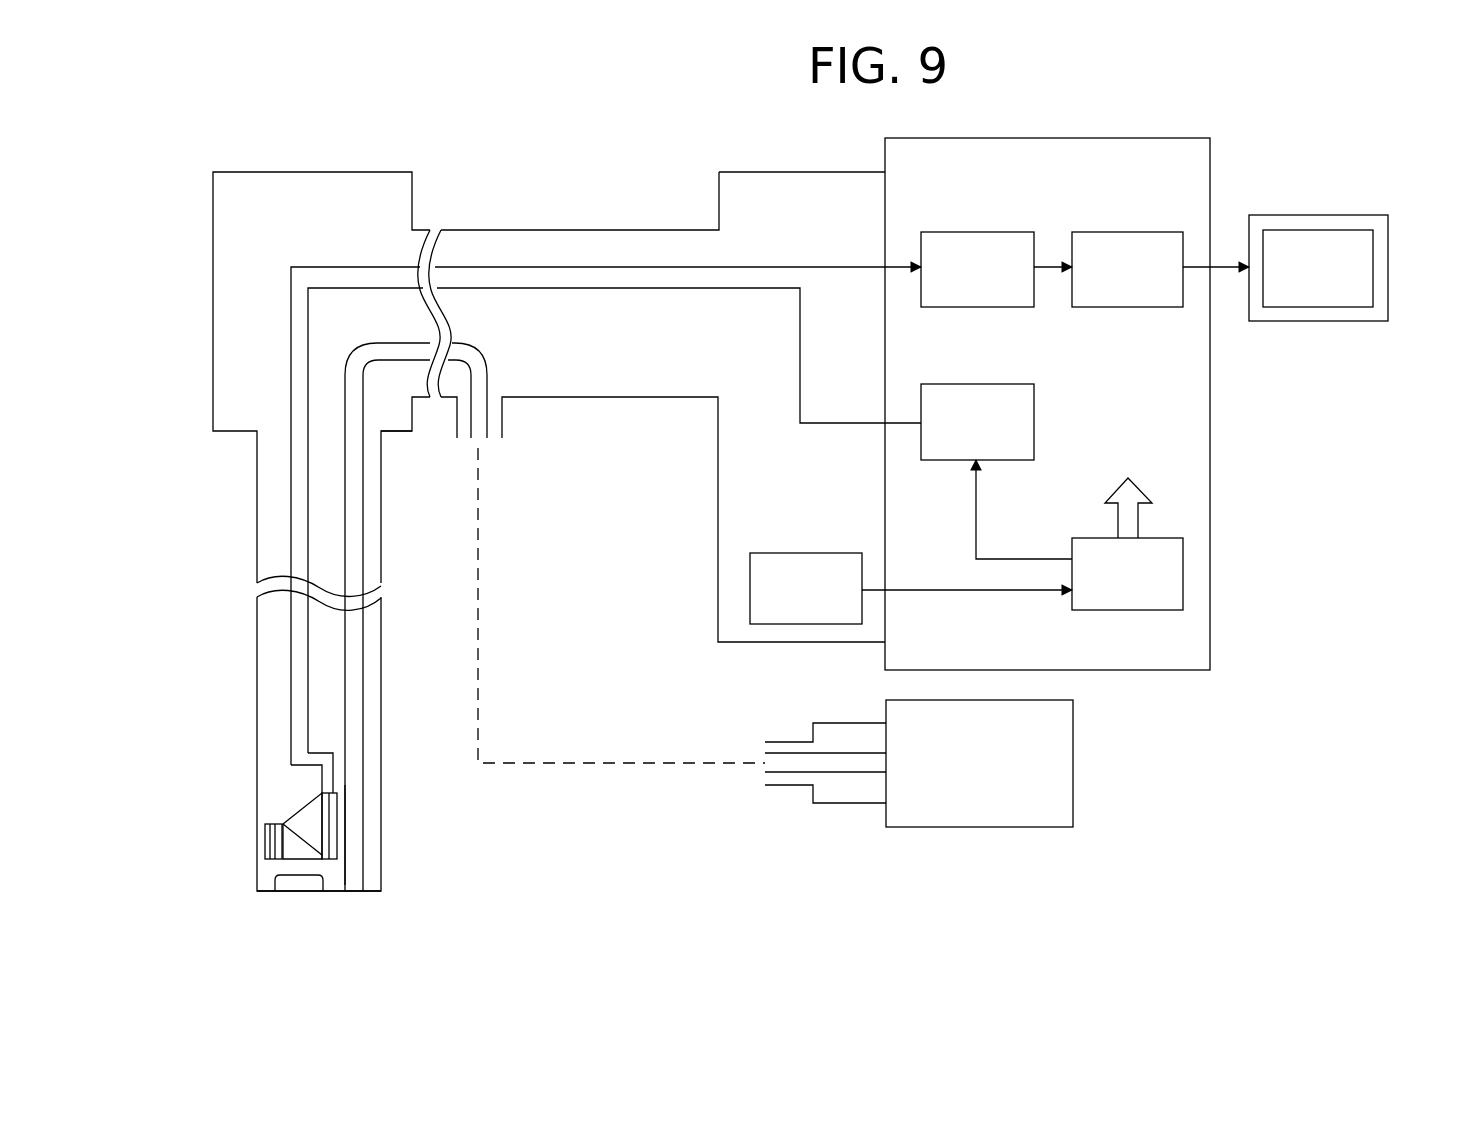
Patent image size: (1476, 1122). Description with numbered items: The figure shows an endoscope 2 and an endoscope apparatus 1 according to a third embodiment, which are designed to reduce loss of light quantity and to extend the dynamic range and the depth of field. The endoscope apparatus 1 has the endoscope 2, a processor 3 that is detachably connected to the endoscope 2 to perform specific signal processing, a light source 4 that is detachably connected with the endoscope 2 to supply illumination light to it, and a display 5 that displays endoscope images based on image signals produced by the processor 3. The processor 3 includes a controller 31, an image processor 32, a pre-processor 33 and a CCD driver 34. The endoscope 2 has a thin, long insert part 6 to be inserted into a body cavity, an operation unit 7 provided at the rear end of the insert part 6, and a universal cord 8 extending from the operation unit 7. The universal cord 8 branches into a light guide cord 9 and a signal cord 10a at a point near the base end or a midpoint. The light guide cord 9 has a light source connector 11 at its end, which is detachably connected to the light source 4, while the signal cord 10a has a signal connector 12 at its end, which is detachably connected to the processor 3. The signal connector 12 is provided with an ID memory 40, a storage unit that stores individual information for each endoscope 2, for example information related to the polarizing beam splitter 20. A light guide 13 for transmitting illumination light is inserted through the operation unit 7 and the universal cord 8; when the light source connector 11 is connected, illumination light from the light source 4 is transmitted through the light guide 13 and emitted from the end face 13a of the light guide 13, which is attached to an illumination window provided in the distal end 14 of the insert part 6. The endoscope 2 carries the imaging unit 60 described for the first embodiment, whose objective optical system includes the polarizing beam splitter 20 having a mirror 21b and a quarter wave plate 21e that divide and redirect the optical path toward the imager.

The endoscope apparatus 1 is at (257, 883).
The endoscope 2 is at (300, 150).
The processor 3 is at (1157, 138).
The light source 4 is at (1073, 765).
The display 5 is at (1380, 270).
The insert part 6 is at (382, 762).
The operation unit 7 is at (392, 433).
The universal cord 8 is at (423, 227).
The light guide cord 9 is at (507, 420).
The signal cord 10a is at (588, 229).
The light source connector 11 is at (840, 723).
The signal connector 12 is at (778, 172).
The light guide 13 is at (355, 697).
The end face of the light guide 13a is at (355, 893).
The distal end 14 is at (400, 785).
The polarizing beam splitter 20 is at (303, 802).
The mirror 21b is at (282, 823).
The quarter wave plate 21e is at (222, 841).
The controller 31 is at (1170, 538).
The image processor 32 is at (1130, 232).
The pre-processor 33 is at (978, 232).
The CCD driver 34 is at (978, 384).
The ID memory 40 is at (808, 553).
The imaging unit 60 is at (217, 802).